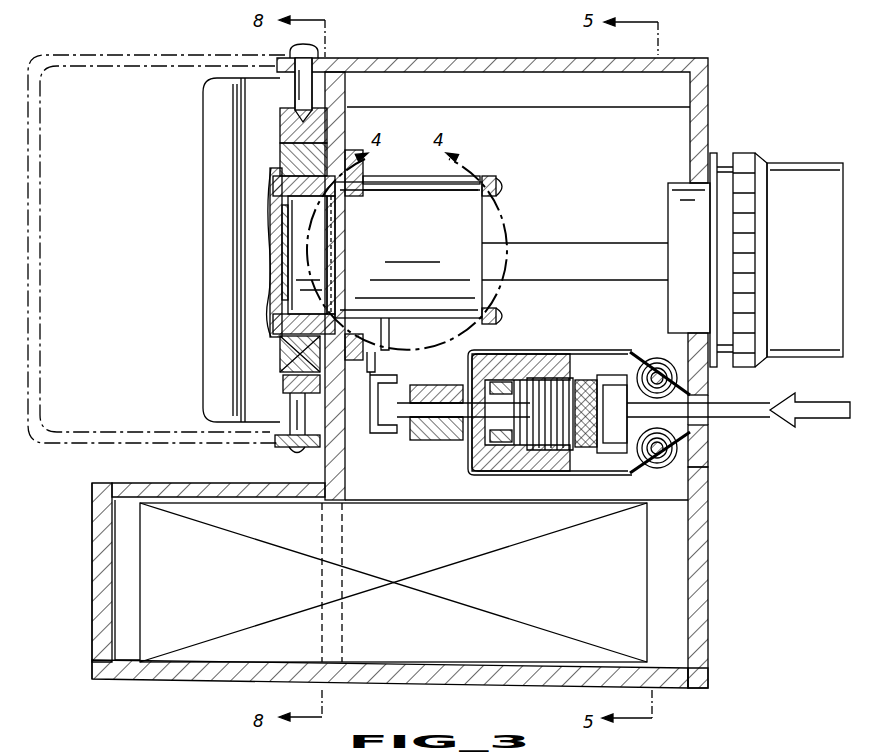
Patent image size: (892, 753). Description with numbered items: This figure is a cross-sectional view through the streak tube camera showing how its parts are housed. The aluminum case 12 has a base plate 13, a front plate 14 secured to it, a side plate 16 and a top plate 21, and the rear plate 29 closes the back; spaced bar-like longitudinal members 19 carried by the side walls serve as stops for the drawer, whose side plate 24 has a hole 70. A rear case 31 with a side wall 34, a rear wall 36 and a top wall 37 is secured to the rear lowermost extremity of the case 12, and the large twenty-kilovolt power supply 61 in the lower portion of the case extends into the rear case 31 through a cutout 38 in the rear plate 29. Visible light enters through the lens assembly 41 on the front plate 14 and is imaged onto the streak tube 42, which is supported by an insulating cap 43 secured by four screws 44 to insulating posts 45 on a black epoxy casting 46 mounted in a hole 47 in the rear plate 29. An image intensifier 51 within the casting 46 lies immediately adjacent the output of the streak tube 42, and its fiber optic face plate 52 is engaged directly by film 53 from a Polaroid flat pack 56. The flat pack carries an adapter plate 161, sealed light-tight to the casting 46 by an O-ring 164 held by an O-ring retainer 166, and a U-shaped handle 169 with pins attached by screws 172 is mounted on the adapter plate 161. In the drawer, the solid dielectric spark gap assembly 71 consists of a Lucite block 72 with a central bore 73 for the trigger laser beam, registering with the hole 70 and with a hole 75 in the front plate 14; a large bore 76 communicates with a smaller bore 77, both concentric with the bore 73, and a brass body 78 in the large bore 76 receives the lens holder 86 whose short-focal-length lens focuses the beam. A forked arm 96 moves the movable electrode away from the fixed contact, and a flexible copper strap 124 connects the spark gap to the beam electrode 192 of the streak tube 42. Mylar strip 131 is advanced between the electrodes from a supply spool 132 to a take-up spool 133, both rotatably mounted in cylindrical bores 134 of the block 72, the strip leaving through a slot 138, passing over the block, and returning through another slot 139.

The case 12 is at (706, 662).
The base plate 13 is at (172, 672).
The front plate 14 is at (700, 562).
The side plate 16 is at (638, 144).
The bar-like longitudinal members 19 is at (542, 95).
The top plate 21 is at (476, 60).
The side plate 24 is at (705, 470).
The rear plate 29 is at (342, 62).
The rear case 31 is at (92, 620).
The side wall 34 is at (122, 582).
The rear wall 36 is at (100, 536).
The top wall 37 is at (168, 482).
The cutout 38 is at (345, 502).
The lens assembly 41 is at (757, 160).
The streak tube 42 is at (460, 224).
The cap 43 is at (490, 175).
The screws 44 is at (500, 189).
The insulating posts 45 is at (408, 184).
The black epoxy casting 46 is at (300, 192).
The hole 47 is at (338, 192).
The image intensifier 51 is at (300, 290).
The fiber optic face plate 52 is at (283, 262).
The film 53 is at (272, 228).
The Polaroid flat pack 56 is at (205, 178).
The power supply 61 is at (528, 599).
The hole 70 is at (708, 420).
The solid dielectric spark gap assembly 71 is at (553, 352).
The block 72 is at (574, 360).
The central bore 73 is at (708, 448).
The hole 75 is at (708, 374).
The large bore 76 is at (510, 360).
The smaller bore 77 is at (612, 372).
The body 78 is at (550, 455).
The lens holder 86 is at (604, 432).
The forked arm 96 is at (508, 462).
The flexible copper strap 124 is at (374, 400).
The strip 131 is at (470, 448).
The supply spool 132 is at (660, 466).
The take-up spool 133 is at (660, 360).
The cylindrical bores 134 is at (676, 357).
The slot 138 is at (648, 470).
The slot 139 is at (660, 360).
The adapter plate 161 is at (284, 362).
The O-ring 164 is at (285, 152).
The O-ring retainer 166 is at (318, 160).
The handle 169 is at (320, 444).
The screws 172 is at (290, 440).
The deflection plate 192 is at (396, 350).